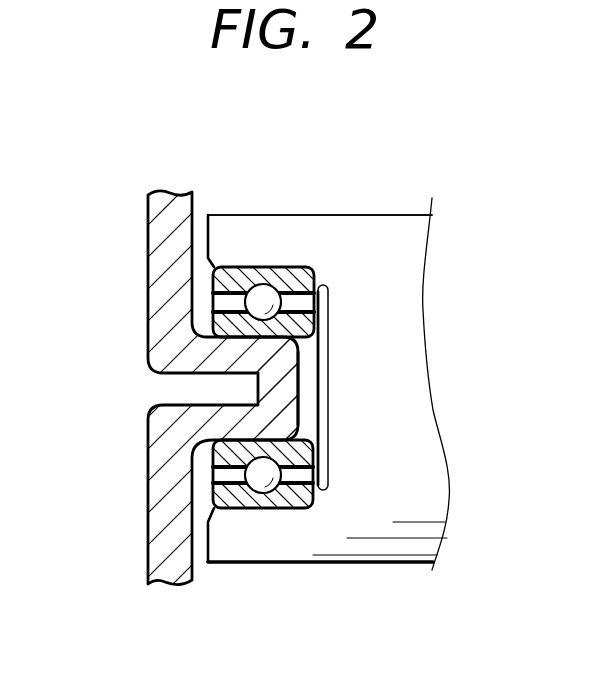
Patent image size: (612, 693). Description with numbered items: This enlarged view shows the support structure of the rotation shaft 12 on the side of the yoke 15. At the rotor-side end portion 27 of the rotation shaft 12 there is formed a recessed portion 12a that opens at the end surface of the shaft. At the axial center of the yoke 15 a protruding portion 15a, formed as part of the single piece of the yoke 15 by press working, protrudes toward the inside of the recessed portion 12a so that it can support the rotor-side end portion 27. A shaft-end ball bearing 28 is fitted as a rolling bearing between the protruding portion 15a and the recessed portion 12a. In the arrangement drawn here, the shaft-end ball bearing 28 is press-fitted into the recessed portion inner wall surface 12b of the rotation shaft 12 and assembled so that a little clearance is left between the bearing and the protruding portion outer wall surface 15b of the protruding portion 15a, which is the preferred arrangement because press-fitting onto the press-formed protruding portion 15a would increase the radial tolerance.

The rotation shaft 12 is at (383, 226).
The recessed portion 12a is at (320, 430).
The recessed portion inner wall surface 12b is at (248, 279).
The yoke 15 is at (155, 227).
The protruding portion 15a is at (298, 365).
The protruding portion outer wall surface 15b is at (289, 266).
The rotor-side end portion 27 is at (249, 215).
The shaft-end ball bearing 28 is at (261, 487).